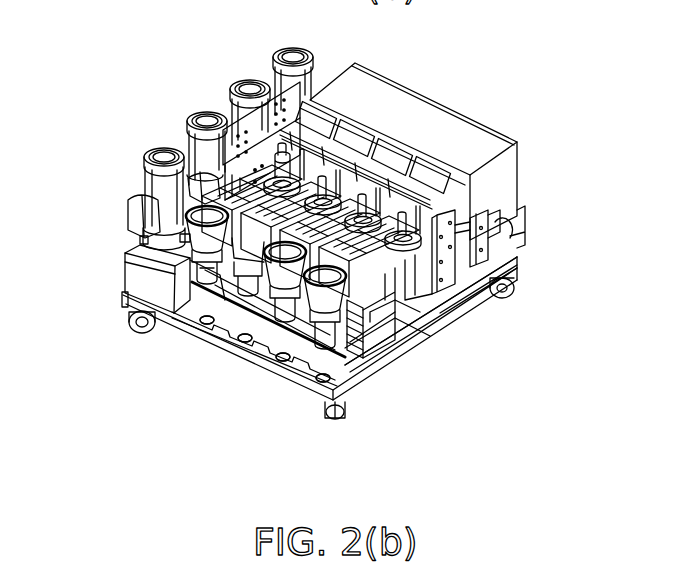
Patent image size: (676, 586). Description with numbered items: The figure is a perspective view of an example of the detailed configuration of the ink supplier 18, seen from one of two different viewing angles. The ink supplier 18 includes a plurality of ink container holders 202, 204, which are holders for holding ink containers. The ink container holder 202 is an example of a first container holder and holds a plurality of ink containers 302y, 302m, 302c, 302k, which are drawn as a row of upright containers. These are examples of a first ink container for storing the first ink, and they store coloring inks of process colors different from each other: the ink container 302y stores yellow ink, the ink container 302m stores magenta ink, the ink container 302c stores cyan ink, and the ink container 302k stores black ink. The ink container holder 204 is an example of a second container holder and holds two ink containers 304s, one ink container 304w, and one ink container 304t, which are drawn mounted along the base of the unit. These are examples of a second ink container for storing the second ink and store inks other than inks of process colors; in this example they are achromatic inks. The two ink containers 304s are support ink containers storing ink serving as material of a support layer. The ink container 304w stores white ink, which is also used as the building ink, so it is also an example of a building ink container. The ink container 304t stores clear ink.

The ink supplier 18 is at (587, 34).
The ink container holder 202 is at (125, 278).
The ink container holder 204 is at (455, 322).
The ink container 302y is at (274, 50).
The ink container 302m is at (230, 84).
The ink container 302c is at (187, 119).
The ink container 302k is at (145, 156).
The ink container 304s is at (230, 333).
The ink container 304w is at (267, 360).
The ink container 304t is at (312, 390).